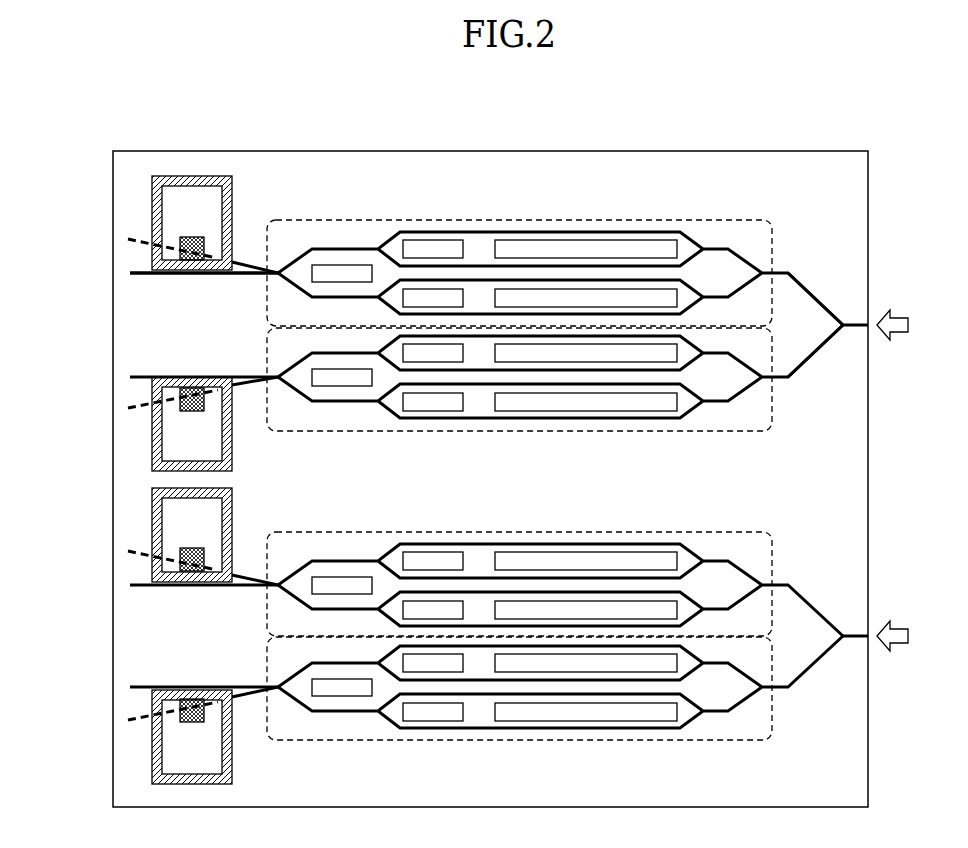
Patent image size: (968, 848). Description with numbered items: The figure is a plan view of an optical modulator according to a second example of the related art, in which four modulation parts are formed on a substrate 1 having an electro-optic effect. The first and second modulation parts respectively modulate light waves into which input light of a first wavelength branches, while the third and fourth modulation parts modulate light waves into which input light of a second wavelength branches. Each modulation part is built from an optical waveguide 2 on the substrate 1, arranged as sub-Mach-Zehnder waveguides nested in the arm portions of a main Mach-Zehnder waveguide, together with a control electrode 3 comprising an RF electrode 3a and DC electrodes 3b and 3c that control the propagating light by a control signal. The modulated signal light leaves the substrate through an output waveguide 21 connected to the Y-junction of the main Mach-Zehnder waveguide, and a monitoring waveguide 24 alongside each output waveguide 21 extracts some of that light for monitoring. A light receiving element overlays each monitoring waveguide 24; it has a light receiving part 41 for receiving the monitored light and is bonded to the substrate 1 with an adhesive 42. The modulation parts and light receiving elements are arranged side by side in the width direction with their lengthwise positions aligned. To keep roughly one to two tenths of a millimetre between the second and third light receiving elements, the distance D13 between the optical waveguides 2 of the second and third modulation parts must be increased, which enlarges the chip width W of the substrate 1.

The substrate 1 is at (842, 170).
The optical waveguide 2 is at (838, 300).
The control electrode 3 is at (494, 397).
The RF electrode 3a is at (592, 238).
The DC electrode 3b is at (440, 238).
The DC electrode 3c is at (350, 262).
The output waveguide 21 is at (138, 270).
The monitoring waveguide 24 is at (138, 238).
The light receiving part 41 is at (193, 236).
The adhesive 42 is at (163, 174).
The chip width W is at (112, 806).
The distance between optical waveguides D13 is at (539, 418).